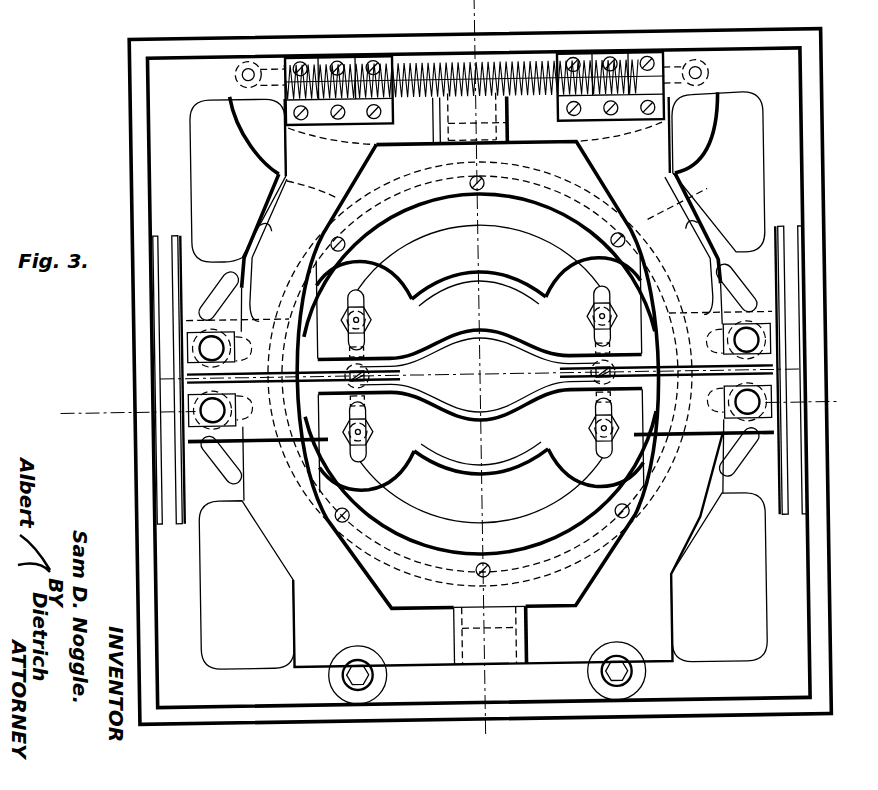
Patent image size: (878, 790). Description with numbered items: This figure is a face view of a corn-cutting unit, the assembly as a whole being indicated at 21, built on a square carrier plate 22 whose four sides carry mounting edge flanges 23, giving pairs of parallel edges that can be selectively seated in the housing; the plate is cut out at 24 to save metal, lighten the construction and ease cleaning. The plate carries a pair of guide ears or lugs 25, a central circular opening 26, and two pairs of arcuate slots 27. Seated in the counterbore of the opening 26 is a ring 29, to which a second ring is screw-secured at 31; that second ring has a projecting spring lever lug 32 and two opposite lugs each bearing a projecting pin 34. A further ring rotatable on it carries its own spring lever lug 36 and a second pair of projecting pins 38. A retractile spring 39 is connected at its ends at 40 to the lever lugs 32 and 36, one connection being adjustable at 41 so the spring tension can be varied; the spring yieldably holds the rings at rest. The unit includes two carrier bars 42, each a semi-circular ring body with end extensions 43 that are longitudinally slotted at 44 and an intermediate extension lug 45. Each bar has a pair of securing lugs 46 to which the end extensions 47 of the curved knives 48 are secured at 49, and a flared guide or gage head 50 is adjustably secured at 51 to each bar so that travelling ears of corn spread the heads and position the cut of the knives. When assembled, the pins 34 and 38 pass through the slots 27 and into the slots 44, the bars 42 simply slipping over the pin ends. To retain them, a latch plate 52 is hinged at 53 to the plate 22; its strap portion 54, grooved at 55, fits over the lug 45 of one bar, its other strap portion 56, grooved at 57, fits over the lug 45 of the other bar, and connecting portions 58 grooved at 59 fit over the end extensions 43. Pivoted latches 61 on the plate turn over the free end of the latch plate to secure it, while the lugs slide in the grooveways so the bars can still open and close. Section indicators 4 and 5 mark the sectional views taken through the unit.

The section line 4- 4 is at (494, 760).
The section line 5- 5 is at (61, 410).
The casing side wall 21 is at (750, 280).
The carrier plate 22 is at (152, 172).
The edge flanges 23 is at (207, 45).
The cut out 24 is at (192, 200).
The guide ears or lugs 25 is at (800, 290).
The central circular opening 26 is at (691, 200).
The arcuate slots 27 is at (205, 312).
The ring 29 is at (548, 203).
The screws 31 is at (608, 239).
The spring lever lug 32 is at (690, 152).
The projecting pins 34 is at (192, 348).
The spring lever lug 36 is at (258, 156).
The projecting pins 38 is at (200, 412).
The retractile spring 39 is at (490, 58).
The spring end connections 40 is at (258, 60).
The adjustable connection 41 is at (330, 54).
The carrier bars 42 is at (438, 232).
The end extensions 43 is at (182, 326).
The longitudinal slots 44 is at (187, 372).
The intermediate extension lug 45 is at (512, 199).
The securing lugs 46 is at (388, 360).
The end extensions of knives 47 is at (352, 362).
The curved knives 48 is at (457, 410).
The knife fastenings 49 is at (608, 352).
The flared guide or gage head 50 is at (470, 290).
The adjustable securing means 51 is at (373, 303).
The latch plate 52 is at (378, 150).
The hinge 53 is at (378, 60).
The strap portion 54 is at (558, 56).
The groove 55 is at (527, 58).
The strap portion 56 is at (468, 622).
The groove 57 is at (500, 652).
The connecting portions 58 is at (279, 200).
The grooves 59 is at (266, 230).
The pivoted latches 61 is at (382, 673).